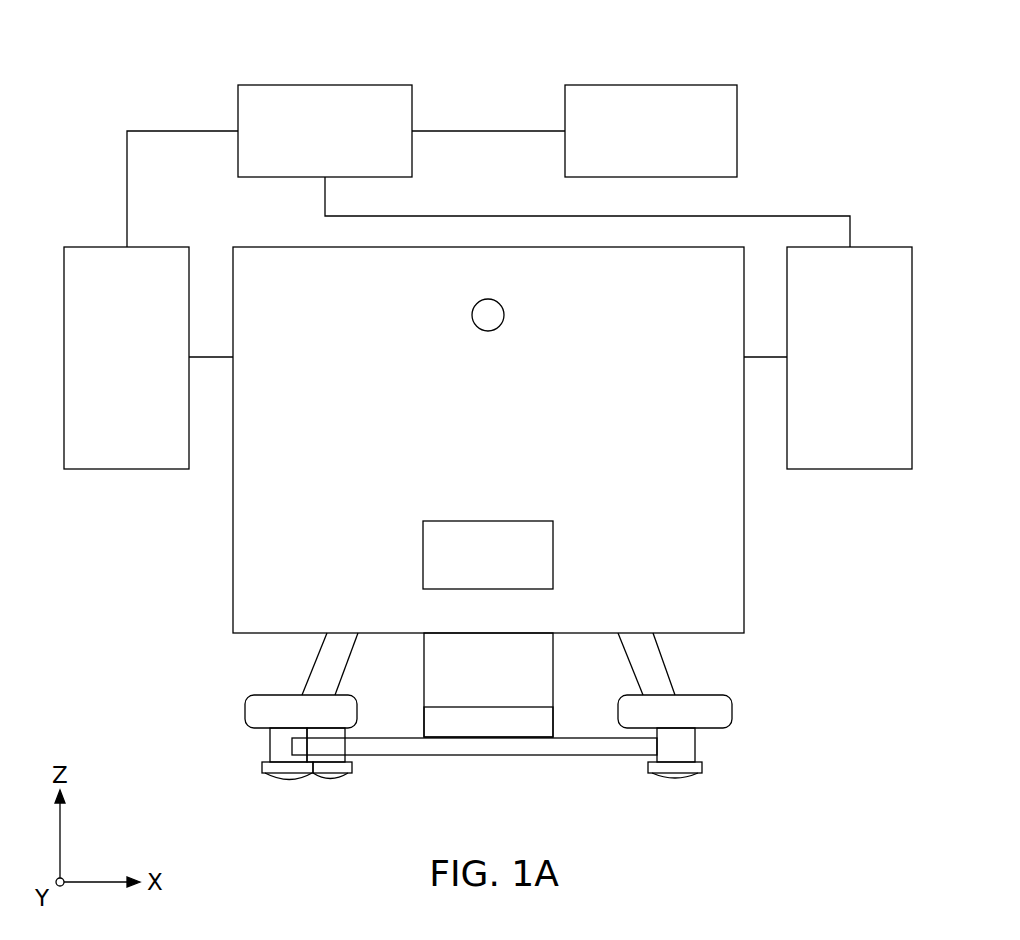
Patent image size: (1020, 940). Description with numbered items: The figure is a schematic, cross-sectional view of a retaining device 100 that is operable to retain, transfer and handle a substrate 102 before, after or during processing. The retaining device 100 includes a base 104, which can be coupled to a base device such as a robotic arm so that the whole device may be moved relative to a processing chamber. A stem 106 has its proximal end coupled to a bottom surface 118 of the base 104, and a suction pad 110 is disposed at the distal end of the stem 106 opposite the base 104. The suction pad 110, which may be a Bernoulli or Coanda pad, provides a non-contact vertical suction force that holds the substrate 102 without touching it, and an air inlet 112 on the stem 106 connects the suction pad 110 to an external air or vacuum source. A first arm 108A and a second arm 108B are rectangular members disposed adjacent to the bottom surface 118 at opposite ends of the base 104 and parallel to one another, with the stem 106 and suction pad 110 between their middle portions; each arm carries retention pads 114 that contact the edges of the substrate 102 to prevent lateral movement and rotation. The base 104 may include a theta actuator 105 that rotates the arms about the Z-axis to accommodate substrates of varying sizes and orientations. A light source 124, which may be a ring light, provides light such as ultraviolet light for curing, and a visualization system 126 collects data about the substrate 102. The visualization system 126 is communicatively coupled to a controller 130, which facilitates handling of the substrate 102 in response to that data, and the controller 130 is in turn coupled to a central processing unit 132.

The retaining device 100 is at (170, 58).
The substrate 102 is at (423, 757).
The base 104 is at (467, 442).
The theta actuator 105 is at (467, 567).
The stem 106 is at (469, 678).
The first arm 108A is at (245, 712).
The second arm 108B is at (723, 713).
The suction pad 110 is at (510, 722).
The air inlet 112 is at (497, 311).
The retention pads 114 is at (268, 745).
The bottom surface 118 is at (246, 642).
The light source 124 is at (829, 374).
The visualization system 126 is at (106, 374).
The controller 130 is at (301, 145).
The central processing unit 132 is at (627, 145).